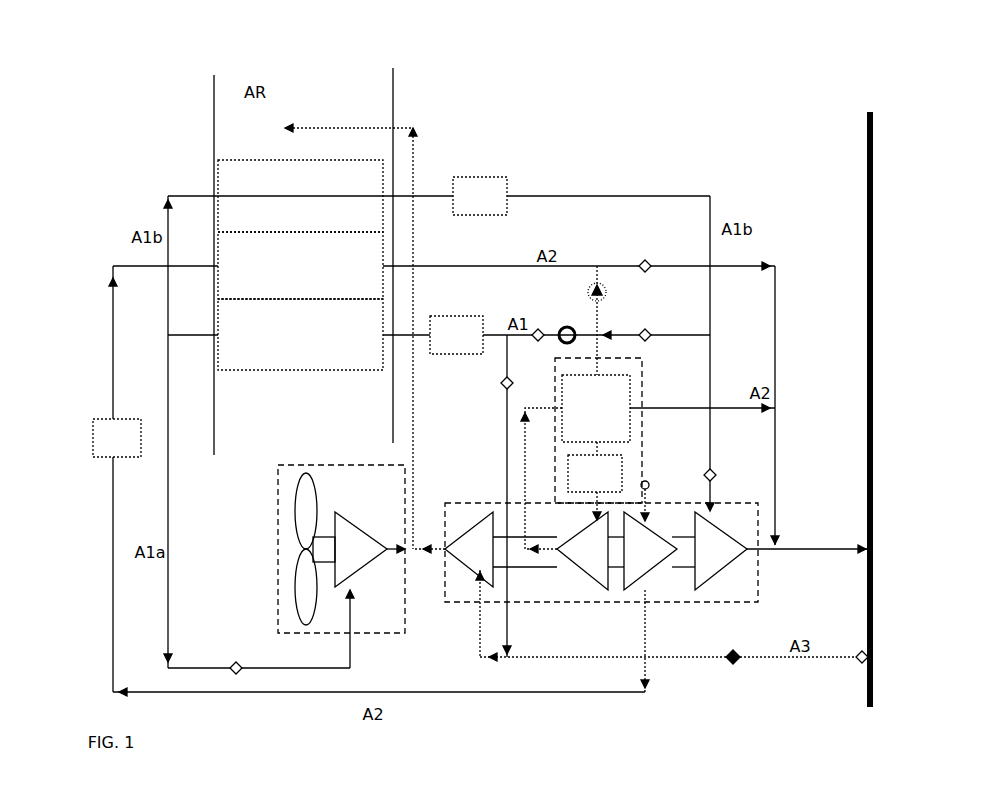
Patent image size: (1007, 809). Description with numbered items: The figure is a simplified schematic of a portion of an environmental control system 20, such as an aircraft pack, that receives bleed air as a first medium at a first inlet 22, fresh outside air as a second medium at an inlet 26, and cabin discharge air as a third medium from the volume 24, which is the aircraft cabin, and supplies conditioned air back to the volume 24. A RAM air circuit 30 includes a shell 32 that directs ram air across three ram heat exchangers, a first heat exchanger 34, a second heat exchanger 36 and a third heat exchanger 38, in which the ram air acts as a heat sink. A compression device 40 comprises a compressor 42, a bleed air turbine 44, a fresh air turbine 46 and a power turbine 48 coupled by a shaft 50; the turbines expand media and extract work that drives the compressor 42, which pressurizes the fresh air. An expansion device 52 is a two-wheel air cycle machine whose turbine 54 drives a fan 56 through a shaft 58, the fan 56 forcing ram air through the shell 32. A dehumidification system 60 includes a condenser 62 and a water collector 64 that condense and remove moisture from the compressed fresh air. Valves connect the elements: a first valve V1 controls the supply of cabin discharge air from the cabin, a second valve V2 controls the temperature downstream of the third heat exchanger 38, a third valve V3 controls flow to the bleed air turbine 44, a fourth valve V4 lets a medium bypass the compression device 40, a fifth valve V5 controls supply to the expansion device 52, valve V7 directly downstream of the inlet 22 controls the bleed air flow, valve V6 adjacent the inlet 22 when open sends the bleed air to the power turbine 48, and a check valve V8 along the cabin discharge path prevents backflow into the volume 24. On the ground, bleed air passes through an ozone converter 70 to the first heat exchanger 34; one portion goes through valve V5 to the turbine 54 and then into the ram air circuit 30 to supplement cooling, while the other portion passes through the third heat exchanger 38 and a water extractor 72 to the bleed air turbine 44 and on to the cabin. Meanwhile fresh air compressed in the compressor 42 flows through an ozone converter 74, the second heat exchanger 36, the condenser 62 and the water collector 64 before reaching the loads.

The environmental control system 20 is at (98, 88).
The first inlet 22 is at (573, 327).
The volume 24 is at (841, 409).
The inlet 26 is at (652, 481).
The RAM air circuit 30 is at (299, 72).
The shell 32 is at (394, 91).
The first heat exchanger 34 is at (300, 334).
The second heat exchanger 36 is at (300, 265).
The third heat exchanger 38 is at (300, 196).
The compression device 40 is at (758, 574).
The compressor 42 is at (643, 568).
The bleed air turbine 44 is at (712, 568).
The fresh air turbine 46 is at (594, 568).
The power turbine 48 is at (477, 570).
The shaft 50 is at (540, 570).
The expansion device 52 is at (278, 611).
The turbine 54 is at (366, 565).
The fan 56 is at (305, 514).
The shaft 58 is at (326, 548).
The dehumidification system 60 is at (642, 378).
The condenser 62 is at (620, 398).
The water collector 64 is at (613, 466).
The ozone converter 70 is at (453, 350).
The water extractor 72 is at (498, 190).
The ozone converter 74 is at (97, 452).
The first valve V1 is at (875, 656).
The second valve V2 is at (645, 328).
The third valve V3 is at (717, 471).
The fourth valve V4 is at (648, 260).
The fifth valve V5 is at (236, 661).
The valve V6 is at (501, 389).
The valve V7 is at (538, 328).
The check valve V8 is at (737, 662).